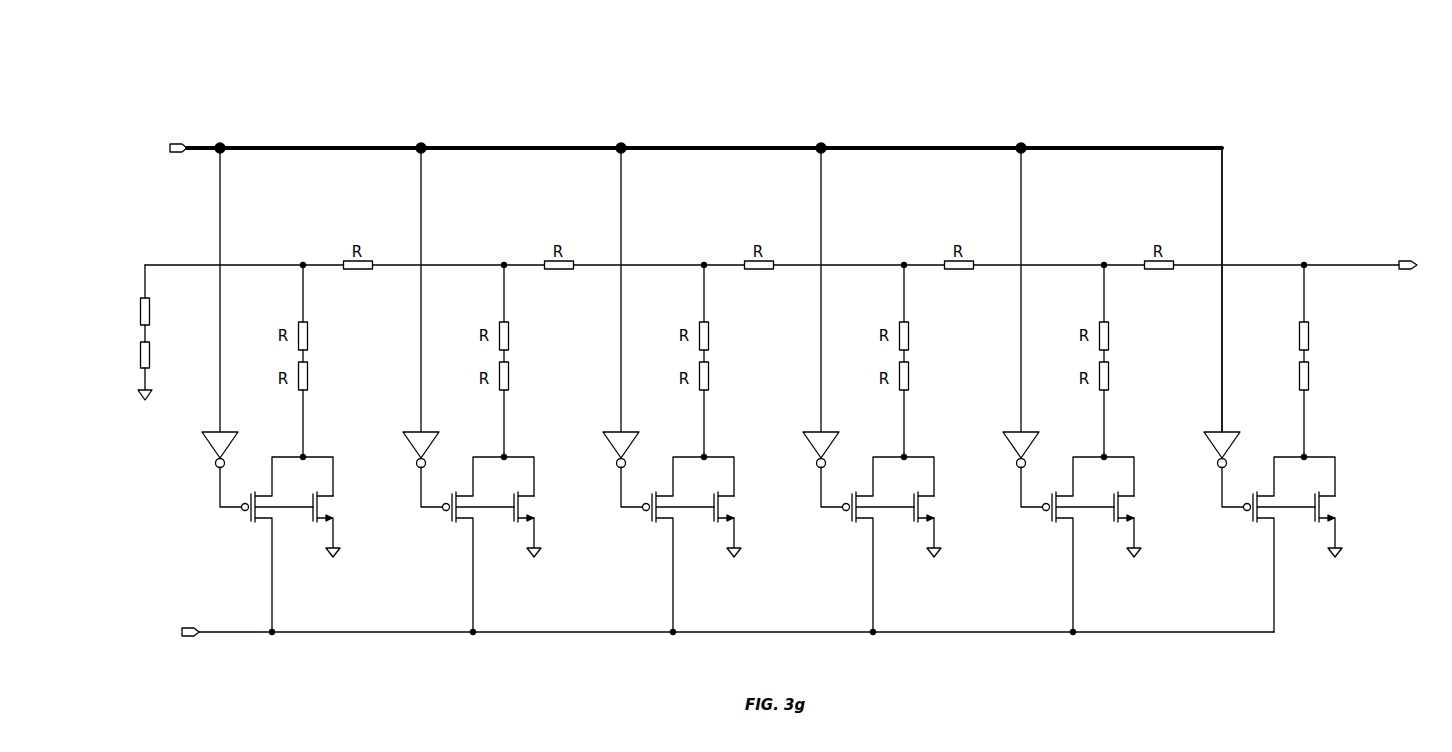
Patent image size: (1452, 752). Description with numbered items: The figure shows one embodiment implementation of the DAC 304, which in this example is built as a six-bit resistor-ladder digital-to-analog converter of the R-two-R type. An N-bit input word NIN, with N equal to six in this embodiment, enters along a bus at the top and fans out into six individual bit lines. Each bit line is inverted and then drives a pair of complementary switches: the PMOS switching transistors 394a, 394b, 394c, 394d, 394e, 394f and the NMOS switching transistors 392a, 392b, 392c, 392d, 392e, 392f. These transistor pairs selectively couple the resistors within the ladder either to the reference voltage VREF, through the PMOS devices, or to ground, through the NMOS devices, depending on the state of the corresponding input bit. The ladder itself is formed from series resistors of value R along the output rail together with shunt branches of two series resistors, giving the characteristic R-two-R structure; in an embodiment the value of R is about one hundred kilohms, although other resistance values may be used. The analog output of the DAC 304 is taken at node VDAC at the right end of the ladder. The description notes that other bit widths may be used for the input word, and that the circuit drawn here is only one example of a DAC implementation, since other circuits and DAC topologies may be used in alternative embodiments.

The DAC 304 is at (229, 59).
The NMOS switching transistor 392a is at (327, 501).
The NMOS switching transistor 392b is at (528, 501).
The NMOS switching transistor 392c is at (728, 501).
The NMOS switching transistor 392d is at (928, 501).
The NMOS switching transistor 392e is at (1128, 501).
The NMOS switching transistor 392f is at (1329, 501).
The PMOS switching transistor 394a is at (262, 520).
The PMOS switching transistor 394b is at (463, 520).
The PMOS switching transistor 394c is at (663, 520).
The PMOS switching transistor 394d is at (863, 520).
The PMOS switching transistor 394e is at (1063, 520).
The PMOS switching transistor 394f is at (1264, 520).